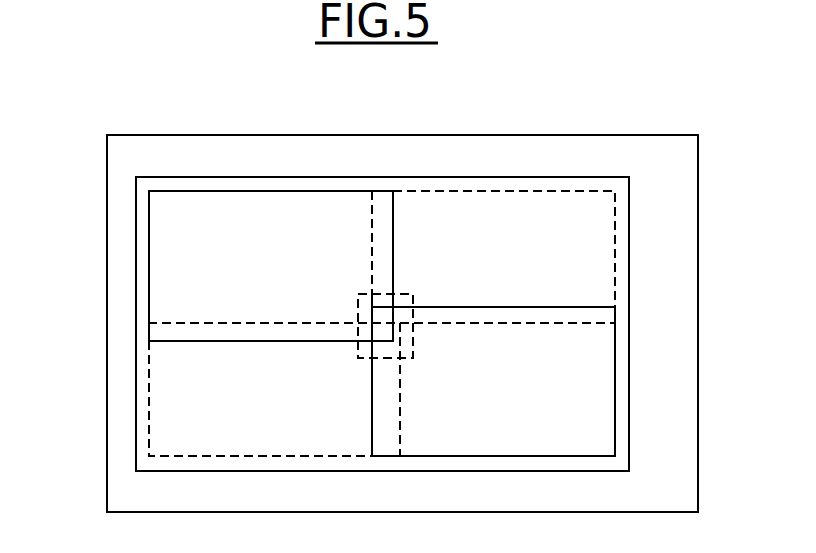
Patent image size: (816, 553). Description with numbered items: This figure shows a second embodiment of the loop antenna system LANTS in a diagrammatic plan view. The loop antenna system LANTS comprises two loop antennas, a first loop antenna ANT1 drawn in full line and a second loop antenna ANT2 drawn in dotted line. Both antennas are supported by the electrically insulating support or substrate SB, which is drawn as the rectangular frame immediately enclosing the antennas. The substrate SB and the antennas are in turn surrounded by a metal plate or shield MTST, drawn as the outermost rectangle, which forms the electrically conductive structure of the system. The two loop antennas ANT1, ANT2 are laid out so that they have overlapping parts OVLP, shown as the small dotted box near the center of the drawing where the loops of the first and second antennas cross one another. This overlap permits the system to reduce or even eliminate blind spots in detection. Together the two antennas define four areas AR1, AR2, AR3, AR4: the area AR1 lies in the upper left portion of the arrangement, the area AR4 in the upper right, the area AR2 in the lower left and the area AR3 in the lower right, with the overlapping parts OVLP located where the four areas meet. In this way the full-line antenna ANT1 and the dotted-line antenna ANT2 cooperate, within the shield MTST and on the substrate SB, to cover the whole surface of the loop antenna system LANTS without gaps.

The metal plate or shield MTST is at (688, 232).
The substrate SB is at (631, 323).
The loop antenna system LANTS is at (588, 150).
The loop antenna ANT1 is at (209, 266).
The loop antenna ANT2 is at (575, 257).
The area AR1 is at (271, 266).
The area AR2 is at (274, 389).
The area AR3 is at (493, 375).
The area AR4 is at (493, 257).
The overlapping parts OVLP is at (358, 294).